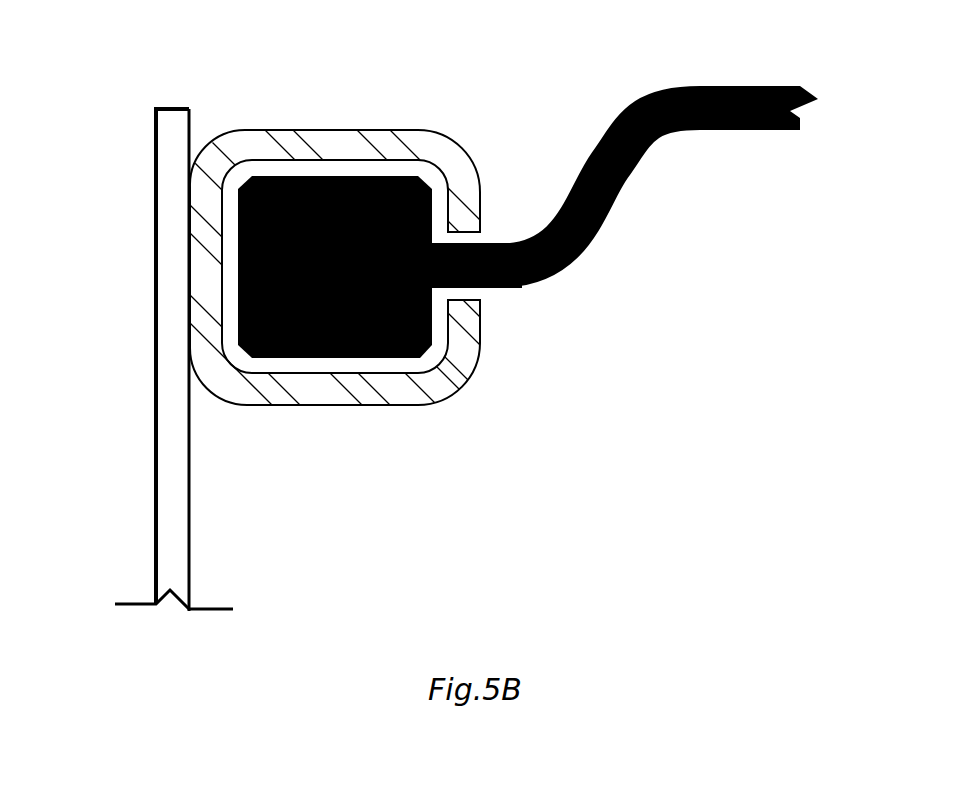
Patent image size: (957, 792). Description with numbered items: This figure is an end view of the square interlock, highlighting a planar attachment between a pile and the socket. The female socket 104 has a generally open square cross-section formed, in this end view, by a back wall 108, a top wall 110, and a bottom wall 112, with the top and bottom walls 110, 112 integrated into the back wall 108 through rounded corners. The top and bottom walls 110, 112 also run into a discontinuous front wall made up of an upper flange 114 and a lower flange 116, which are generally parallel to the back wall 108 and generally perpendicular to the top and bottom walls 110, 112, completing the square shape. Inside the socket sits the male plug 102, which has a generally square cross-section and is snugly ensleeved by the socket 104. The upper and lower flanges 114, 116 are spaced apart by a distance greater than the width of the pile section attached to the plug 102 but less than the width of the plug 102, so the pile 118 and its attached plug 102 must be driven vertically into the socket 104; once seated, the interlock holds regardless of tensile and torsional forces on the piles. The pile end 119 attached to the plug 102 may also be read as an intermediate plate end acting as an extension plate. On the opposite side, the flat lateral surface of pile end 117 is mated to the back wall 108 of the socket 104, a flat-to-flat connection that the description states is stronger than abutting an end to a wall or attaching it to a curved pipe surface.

The male plug 102 is at (373, 356).
The female socket 104 is at (482, 145).
The back wall 108 is at (208, 260).
The top wall 110 is at (273, 148).
The bottom wall 112 is at (270, 407).
The upper flange 114 is at (471, 210).
The lower flange 116 is at (471, 348).
The pile end 117 is at (178, 502).
The pile 118 is at (697, 130).
The pile end 119 is at (483, 290).